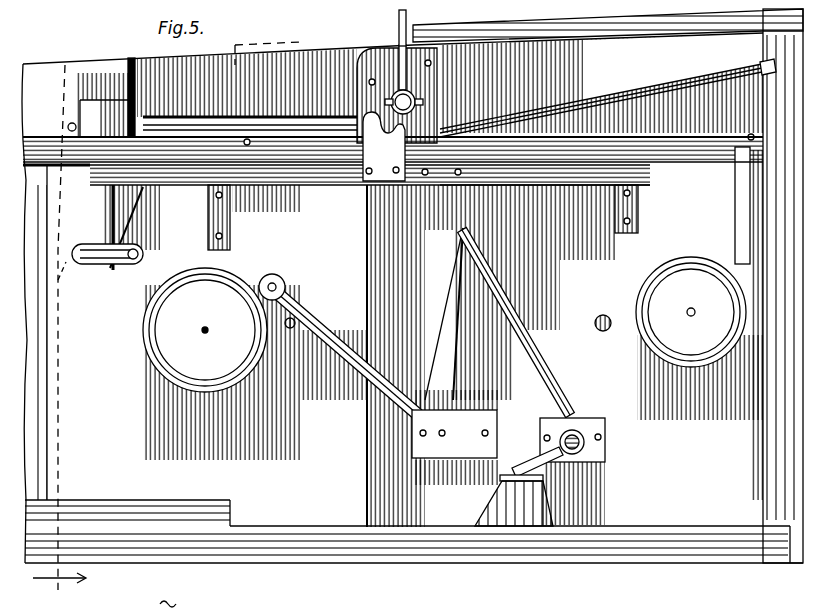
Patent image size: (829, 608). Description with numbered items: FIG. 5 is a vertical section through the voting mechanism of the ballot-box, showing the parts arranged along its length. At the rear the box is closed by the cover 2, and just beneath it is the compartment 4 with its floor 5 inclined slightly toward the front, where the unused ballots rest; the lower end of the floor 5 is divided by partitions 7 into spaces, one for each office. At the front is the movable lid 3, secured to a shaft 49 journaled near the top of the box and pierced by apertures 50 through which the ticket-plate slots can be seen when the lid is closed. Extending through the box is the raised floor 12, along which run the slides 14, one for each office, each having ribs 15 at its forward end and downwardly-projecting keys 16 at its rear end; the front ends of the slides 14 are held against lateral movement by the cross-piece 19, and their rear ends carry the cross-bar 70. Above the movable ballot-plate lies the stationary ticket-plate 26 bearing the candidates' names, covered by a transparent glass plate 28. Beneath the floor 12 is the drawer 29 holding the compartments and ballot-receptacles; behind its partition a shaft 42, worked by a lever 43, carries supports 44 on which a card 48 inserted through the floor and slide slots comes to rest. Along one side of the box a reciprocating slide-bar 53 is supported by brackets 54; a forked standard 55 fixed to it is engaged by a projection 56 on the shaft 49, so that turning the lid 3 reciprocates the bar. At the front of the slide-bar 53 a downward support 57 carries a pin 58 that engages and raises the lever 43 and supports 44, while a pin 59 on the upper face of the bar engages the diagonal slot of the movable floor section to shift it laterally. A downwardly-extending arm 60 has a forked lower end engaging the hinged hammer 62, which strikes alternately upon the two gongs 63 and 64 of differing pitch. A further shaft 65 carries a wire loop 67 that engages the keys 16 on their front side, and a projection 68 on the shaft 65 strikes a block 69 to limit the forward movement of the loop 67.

The cover 2 is at (608, 25).
The movable lid 3 is at (399, 20).
The compartment 4 is at (622, 71).
The floor 5 is at (598, 108).
The partitions 7 is at (178, 312).
The raised floor 12 is at (642, 147).
The slides 14 is at (75, 137).
The ribs 15 is at (68, 125).
The fingers or keys 16 is at (735, 181).
The cross-piece 19 is at (133, 105).
The ticket-plate 26 is at (205, 127).
The transparent glass plate 28 is at (172, 120).
The drawer 29 is at (350, 492).
The shaft 42 is at (137, 256).
The lever 43 is at (78, 247).
The supports 44 is at (53, 292).
The card 48 is at (86, 101).
The shaft 49 is at (417, 100).
The apertures 50 is at (180, 599).
The slide-bar 53 is at (575, 183).
The brackets 54 is at (230, 205).
The forked standard 55 is at (375, 150).
The projection 56 is at (389, 103).
The support 57 is at (128, 224).
The pin 58 is at (117, 277).
The pin 59 is at (249, 139).
The arm 60 is at (440, 353).
The hammer 62 is at (338, 352).
The gong 63 is at (640, 292).
The gong 64 is at (237, 386).
The shaft 65 is at (585, 443).
The loop 67 is at (505, 318).
The projection 68 is at (548, 463).
The block 69 is at (520, 483).
The cross-bar 70 is at (750, 135).